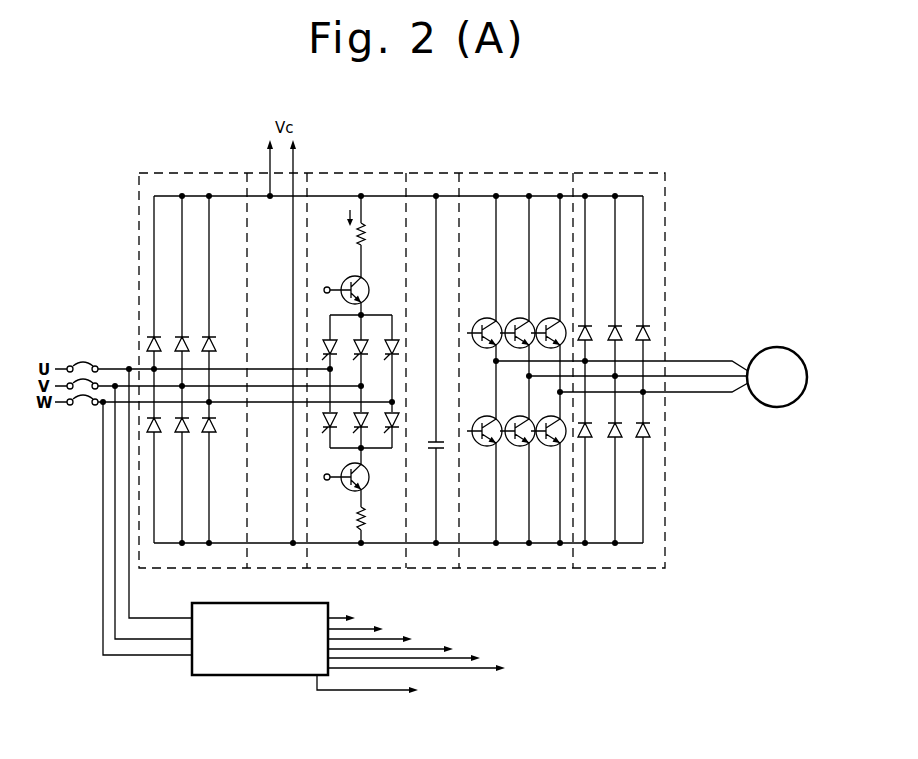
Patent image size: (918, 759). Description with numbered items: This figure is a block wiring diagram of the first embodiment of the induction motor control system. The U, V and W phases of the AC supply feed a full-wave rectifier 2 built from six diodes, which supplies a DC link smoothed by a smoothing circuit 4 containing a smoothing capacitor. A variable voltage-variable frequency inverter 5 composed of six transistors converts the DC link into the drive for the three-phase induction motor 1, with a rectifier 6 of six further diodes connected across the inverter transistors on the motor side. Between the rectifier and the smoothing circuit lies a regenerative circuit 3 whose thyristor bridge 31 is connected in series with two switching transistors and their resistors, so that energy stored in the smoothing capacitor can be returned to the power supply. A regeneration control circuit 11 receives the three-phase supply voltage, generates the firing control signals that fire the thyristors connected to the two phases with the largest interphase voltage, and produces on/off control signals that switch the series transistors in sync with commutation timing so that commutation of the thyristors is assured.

The three-phase induction motor 1 is at (770, 347).
The full-wave rectifier 2 is at (160, 173).
The regenerative circuit 3 is at (383, 173).
The smoothing circuit 4 is at (441, 173).
The variable voltage-variable frequency inverter 5 is at (513, 173).
The rectifier 6 is at (610, 173).
The regeneration control circuit 11 is at (267, 675).
The thyristor bridge 31 is at (370, 312).